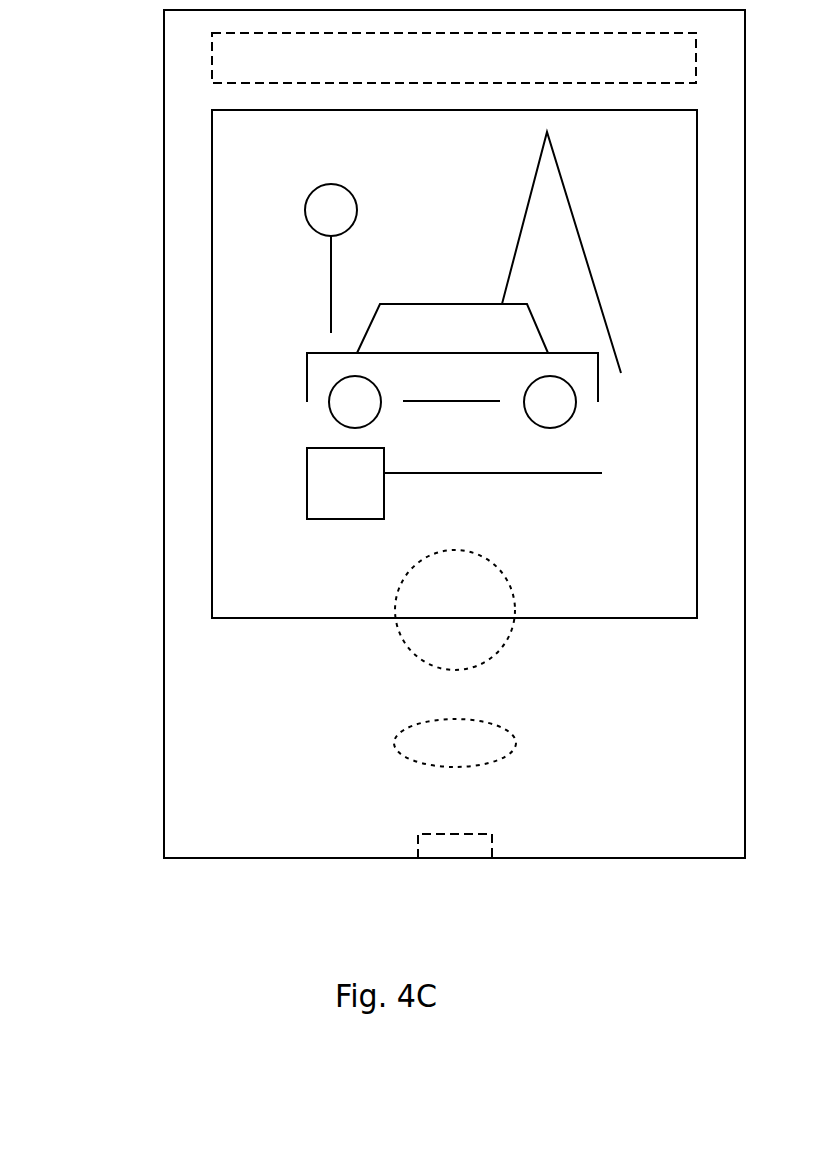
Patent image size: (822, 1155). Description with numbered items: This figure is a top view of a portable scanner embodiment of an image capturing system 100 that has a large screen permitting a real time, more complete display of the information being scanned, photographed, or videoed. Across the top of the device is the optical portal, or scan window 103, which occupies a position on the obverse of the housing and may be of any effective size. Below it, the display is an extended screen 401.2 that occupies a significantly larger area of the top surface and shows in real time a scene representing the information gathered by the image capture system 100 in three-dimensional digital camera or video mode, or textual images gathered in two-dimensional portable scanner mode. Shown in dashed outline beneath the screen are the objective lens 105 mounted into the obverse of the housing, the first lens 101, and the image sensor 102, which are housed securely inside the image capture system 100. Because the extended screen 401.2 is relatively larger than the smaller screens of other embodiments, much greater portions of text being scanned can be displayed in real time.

The image capturing system 100 is at (198, 35).
The optical portal (scan window) 103 is at (465, 81).
The extended screen 401.2 is at (273, 588).
The objective lens 105 is at (508, 642).
The first lens 101 is at (485, 747).
The image sensor 102 is at (492, 834).